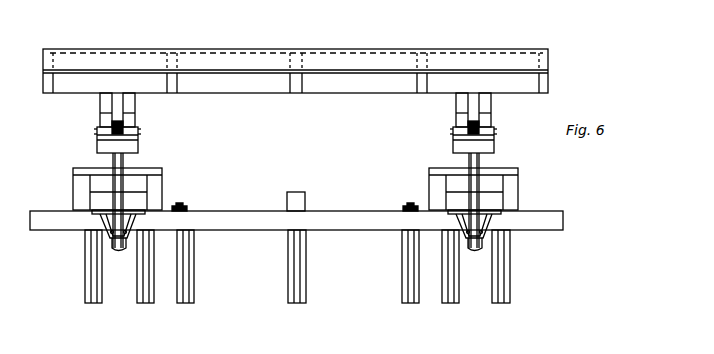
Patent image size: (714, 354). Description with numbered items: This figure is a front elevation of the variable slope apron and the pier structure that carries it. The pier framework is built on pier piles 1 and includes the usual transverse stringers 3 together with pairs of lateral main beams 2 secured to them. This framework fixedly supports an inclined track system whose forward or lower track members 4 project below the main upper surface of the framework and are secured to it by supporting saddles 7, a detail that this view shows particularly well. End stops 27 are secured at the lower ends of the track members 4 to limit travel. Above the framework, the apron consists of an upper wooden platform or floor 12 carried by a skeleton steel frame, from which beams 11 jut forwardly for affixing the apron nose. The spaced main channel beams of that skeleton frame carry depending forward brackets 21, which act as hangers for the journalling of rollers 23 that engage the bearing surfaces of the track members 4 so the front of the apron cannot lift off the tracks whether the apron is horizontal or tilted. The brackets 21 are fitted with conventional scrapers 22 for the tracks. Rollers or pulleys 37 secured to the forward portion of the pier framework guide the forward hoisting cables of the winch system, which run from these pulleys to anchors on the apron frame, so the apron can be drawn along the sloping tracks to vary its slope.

The pier piles 1 is at (304, 282).
The lateral main beams 2 is at (73, 188).
The transverse stringers 3 is at (369, 226).
The forward track members 4 is at (123, 163).
The supporting saddles 7 is at (101, 222).
The beams 11 is at (546, 69).
The upper wooden platform 12 is at (470, 50).
The forward brackets 21 is at (100, 115).
The scrapers 22 is at (138, 140).
The rollers 23 is at (124, 125).
The end stops 27 is at (115, 250).
The rollers or pulleys 37 is at (186, 206).